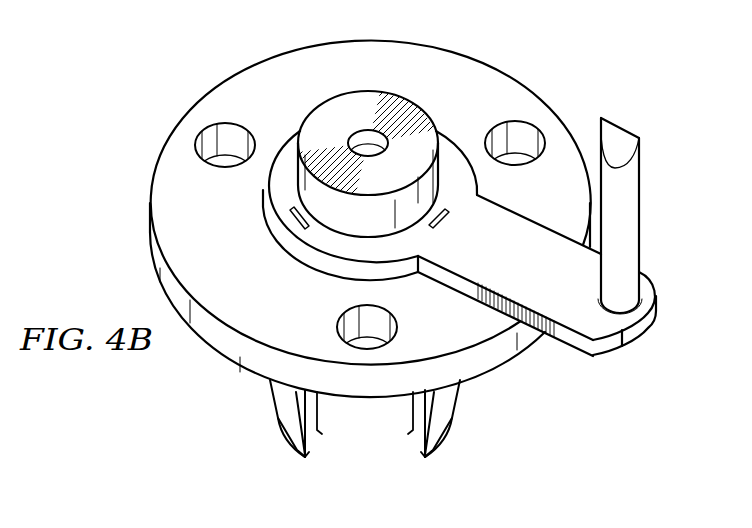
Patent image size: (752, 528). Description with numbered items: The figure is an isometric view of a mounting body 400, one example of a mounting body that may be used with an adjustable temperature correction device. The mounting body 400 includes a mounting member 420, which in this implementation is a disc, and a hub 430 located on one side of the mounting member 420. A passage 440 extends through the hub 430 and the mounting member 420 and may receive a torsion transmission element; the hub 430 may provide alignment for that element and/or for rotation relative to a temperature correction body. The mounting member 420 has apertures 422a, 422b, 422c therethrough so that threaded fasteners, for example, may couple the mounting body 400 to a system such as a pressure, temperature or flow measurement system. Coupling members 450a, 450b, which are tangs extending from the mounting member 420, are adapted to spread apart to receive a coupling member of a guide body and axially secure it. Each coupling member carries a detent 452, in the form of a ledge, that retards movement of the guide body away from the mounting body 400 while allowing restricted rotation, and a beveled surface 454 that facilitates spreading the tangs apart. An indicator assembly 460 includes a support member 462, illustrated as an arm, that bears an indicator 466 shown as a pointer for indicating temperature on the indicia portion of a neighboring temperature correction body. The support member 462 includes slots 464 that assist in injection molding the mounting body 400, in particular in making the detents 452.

The mounting body 400 is at (115, 112).
The mounting member 420 is at (285, 54).
The aperture 422a is at (522, 137).
The aperture 422b is at (226, 136).
The aperture 422c is at (367, 317).
The hub 430 is at (366, 100).
The passage 440 is at (360, 133).
The coupling member 450a is at (261, 399).
The coupling member 450b is at (473, 396).
The detent 452 is at (412, 430).
The beveled surface 454 is at (327, 445).
The indicator assembly 460 is at (645, 340).
The support member 462 is at (558, 340).
The slot 464 is at (290, 212).
The indicator 466 is at (641, 182).